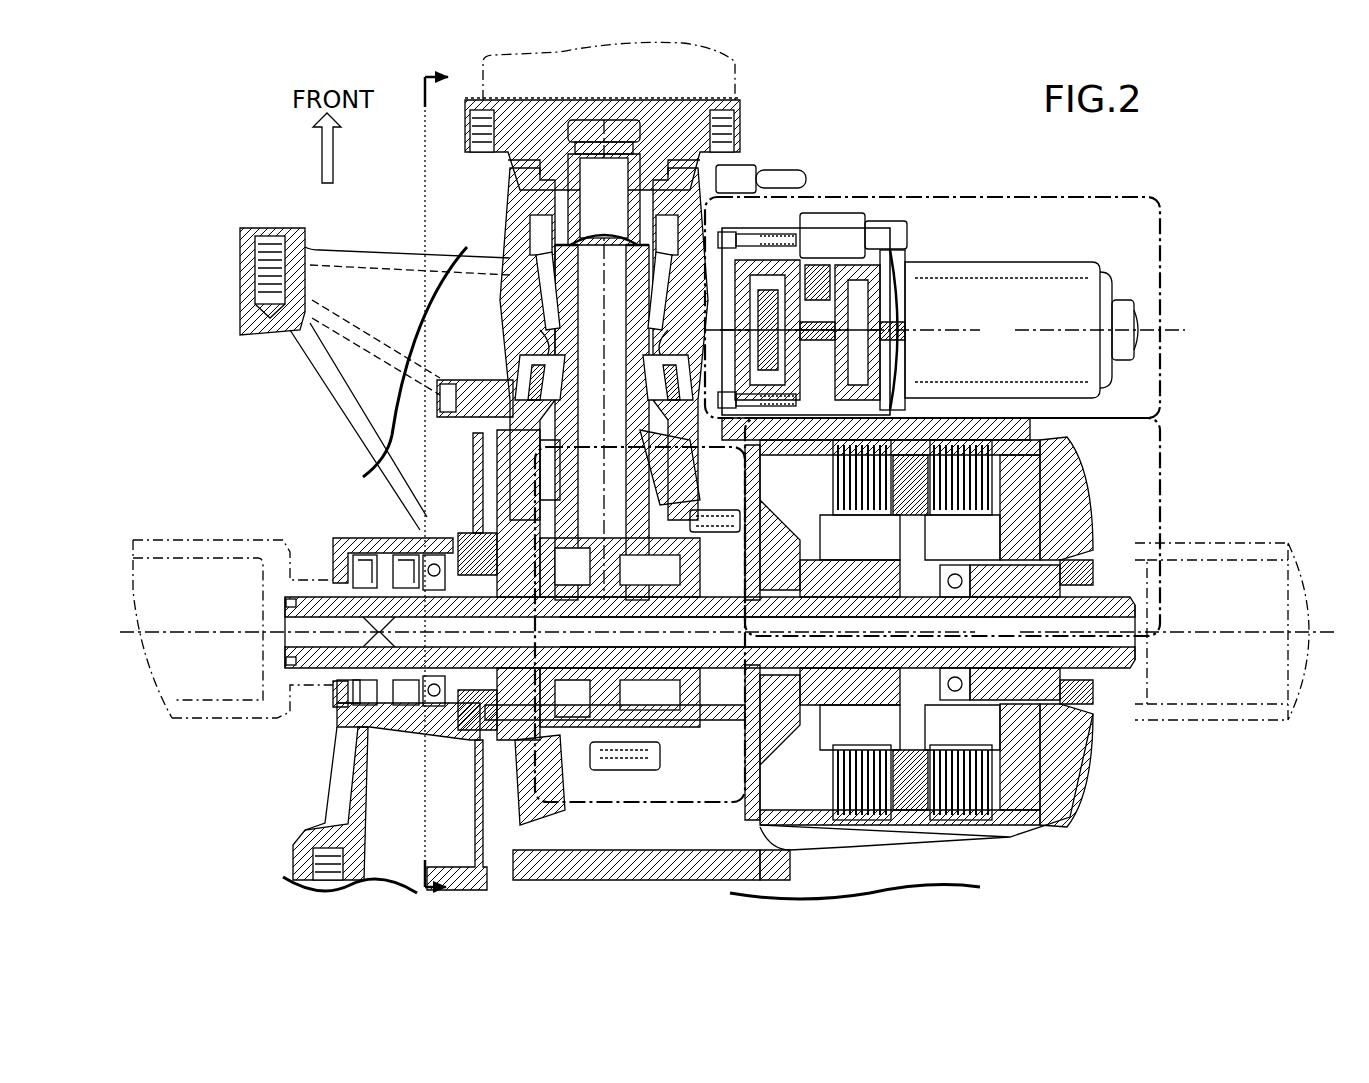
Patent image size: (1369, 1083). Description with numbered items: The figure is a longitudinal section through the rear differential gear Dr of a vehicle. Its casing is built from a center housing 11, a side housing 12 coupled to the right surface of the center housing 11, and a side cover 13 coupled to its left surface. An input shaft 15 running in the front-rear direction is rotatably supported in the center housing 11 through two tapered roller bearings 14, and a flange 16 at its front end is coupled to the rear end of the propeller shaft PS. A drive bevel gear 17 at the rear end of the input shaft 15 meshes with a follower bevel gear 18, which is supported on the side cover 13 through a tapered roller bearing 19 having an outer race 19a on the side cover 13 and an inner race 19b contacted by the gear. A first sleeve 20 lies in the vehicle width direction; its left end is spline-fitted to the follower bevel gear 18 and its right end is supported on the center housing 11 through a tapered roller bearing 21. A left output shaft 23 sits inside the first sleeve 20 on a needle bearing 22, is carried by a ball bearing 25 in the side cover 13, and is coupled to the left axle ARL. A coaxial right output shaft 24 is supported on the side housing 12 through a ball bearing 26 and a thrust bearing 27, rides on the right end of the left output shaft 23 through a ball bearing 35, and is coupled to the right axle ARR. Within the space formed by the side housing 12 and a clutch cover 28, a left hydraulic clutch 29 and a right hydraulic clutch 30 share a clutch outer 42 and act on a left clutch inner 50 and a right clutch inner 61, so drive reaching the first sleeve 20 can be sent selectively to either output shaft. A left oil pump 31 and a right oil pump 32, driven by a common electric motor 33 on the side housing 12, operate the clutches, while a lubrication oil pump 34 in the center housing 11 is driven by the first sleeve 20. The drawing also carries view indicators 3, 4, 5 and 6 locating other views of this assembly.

The clutch unit section 3 is at (1166, 459).
The drive unit section 4 is at (1166, 236).
The differential section 5 is at (612, 808).
The section line 6 is at (422, 484).
The center housing 11 is at (627, 863).
The side housing 12 is at (847, 847).
The side cover 13 is at (474, 787).
The tapered roller bearings 14 is at (530, 278).
The input shaft 15 is at (602, 417).
The flange 16 is at (733, 130).
The drive bevel gear 17 is at (670, 467).
The follower bevel gear 18 is at (533, 817).
The tapered roller bearing 19 is at (493, 522).
The outer race 19a is at (467, 530).
The inner race 19b is at (710, 632).
The first sleeve 20 is at (555, 563).
The tapered roller bearing 21 is at (690, 525).
The needle bearing 22 is at (835, 632).
The left output shaft 23 is at (342, 672).
The right output shaft 24 is at (1047, 684).
The ball bearing 25 is at (427, 537).
The ball bearing 26 is at (975, 598).
The thrust bearing 27 is at (945, 598).
The clutch cover 28 is at (748, 462).
The left hydraulic clutch 29 is at (880, 425).
The right hydraulic clutch 30 is at (975, 440).
The left oil pump 31 is at (755, 262).
The right oil pump 32 is at (790, 268).
The electric motor 33 is at (1012, 343).
The lubrication oil pump 34 is at (620, 515).
The ball bearing 35 is at (883, 590).
The clutch outer 42 is at (956, 440).
The left clutch inner 50 is at (850, 520).
The right clutch inner 61 is at (990, 523).
The propeller shaft PS is at (738, 62).
The rear differential gear Dr is at (898, 172).
The left axle ARL is at (213, 540).
The right axle ARR is at (1225, 540).